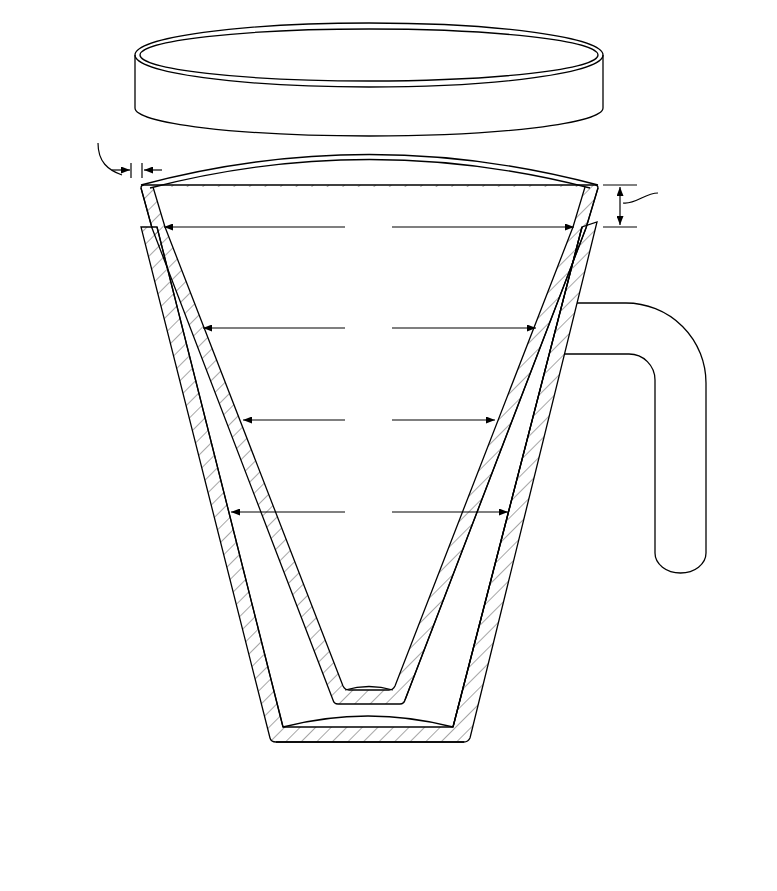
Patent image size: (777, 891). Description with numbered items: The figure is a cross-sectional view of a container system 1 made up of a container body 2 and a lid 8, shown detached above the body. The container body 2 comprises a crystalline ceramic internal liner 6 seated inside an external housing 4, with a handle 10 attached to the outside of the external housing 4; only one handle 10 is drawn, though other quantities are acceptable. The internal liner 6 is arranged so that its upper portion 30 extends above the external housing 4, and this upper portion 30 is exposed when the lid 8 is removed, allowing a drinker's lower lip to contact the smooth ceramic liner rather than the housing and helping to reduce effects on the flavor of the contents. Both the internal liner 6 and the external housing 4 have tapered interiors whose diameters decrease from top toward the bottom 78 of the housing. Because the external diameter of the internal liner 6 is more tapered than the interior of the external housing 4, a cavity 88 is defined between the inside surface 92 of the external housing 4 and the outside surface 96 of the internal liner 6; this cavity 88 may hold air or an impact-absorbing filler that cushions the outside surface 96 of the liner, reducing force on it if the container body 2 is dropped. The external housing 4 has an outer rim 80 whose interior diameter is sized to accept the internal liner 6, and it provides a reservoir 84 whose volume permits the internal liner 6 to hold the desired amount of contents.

The container system 1 is at (91, 77).
The container body 2 is at (613, 276).
The external housing 4 is at (158, 297).
The internal liner 6 is at (582, 173).
The lid 8 is at (577, 46).
The handle 10 is at (662, 334).
The upper portion 30 is at (585, 201).
The bottom 78 is at (471, 748).
The outer rim 80 is at (162, 229).
The reservoir 84 is at (277, 632).
The cavity 88 is at (473, 570).
The inside surface 92 is at (533, 402).
The outside surface 96 is at (496, 458).